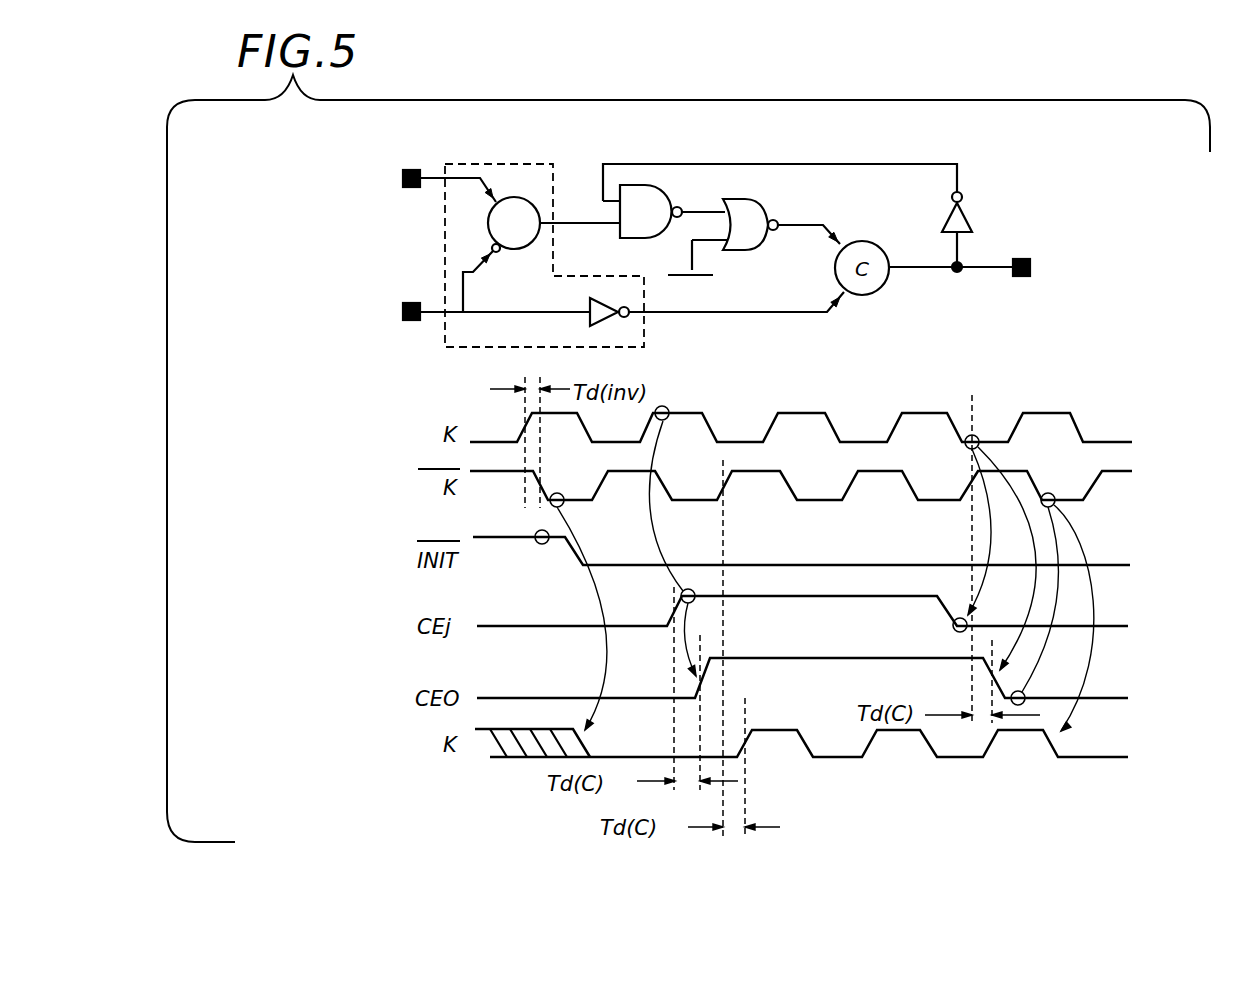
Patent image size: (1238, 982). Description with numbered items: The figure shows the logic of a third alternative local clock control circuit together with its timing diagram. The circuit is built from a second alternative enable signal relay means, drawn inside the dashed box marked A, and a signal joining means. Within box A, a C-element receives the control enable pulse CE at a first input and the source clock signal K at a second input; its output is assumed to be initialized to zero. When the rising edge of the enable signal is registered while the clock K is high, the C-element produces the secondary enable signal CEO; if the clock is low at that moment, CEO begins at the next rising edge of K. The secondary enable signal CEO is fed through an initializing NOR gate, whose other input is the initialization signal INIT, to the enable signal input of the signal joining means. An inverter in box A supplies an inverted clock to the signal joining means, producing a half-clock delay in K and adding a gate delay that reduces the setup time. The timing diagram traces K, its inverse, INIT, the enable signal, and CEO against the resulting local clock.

The enable signal relay means A is at (544, 239).
The control enable pulse CE is at (425, 184).
The source clock signal K is at (604, 309).
The secondary enable signal CEO is at (580, 239).
The initializing input INIT is at (697, 274).